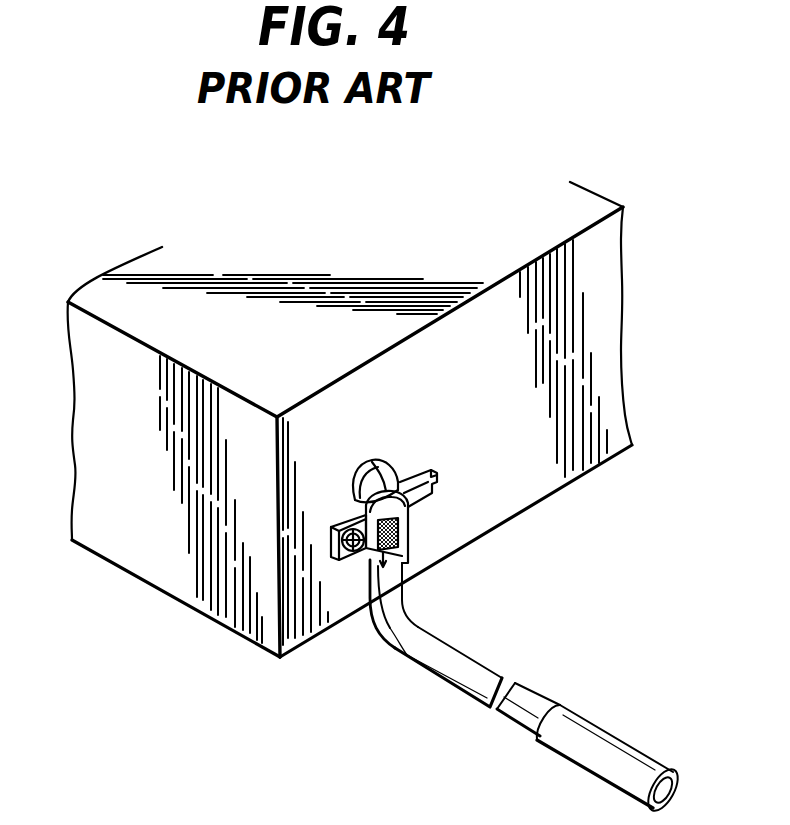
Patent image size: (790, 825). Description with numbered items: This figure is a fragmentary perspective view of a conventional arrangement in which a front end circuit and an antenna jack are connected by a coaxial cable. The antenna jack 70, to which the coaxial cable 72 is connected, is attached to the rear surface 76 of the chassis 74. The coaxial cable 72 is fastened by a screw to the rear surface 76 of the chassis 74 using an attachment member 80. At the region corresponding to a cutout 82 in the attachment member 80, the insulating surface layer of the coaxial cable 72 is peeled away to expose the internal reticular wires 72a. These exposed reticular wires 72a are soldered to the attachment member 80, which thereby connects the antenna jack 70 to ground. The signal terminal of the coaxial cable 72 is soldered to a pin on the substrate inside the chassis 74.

The antenna jack 70 is at (602, 732).
The coaxial cable 72 is at (487, 670).
The reticular wires 72a is at (410, 545).
The chassis 74 is at (587, 213).
The rear surface 76 is at (542, 475).
The attachment member 80 is at (423, 508).
The cutout 82 is at (372, 613).